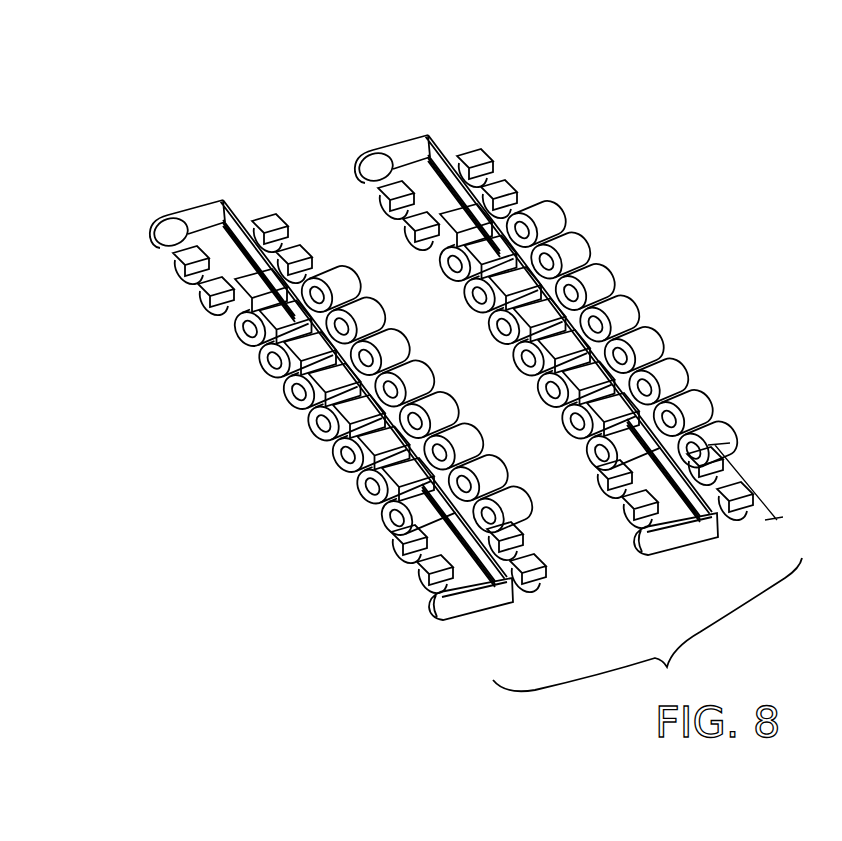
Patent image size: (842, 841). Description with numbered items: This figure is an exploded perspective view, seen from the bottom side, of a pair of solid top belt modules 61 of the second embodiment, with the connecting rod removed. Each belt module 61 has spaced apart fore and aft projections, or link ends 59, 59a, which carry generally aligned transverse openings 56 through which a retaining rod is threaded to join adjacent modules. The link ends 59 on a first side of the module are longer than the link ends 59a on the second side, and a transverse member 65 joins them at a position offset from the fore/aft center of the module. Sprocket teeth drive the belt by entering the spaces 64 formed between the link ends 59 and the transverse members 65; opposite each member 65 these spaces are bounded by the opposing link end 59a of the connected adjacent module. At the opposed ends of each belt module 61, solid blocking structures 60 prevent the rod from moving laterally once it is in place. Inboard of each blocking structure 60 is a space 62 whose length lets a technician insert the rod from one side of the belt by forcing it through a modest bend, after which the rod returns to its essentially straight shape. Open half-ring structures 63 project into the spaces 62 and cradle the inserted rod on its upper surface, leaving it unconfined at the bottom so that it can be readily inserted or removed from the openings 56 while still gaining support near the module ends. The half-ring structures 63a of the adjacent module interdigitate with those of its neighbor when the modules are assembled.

The transverse openings 56 is at (280, 399).
The link ends 59 is at (345, 490).
The link ends 59a is at (345, 312).
The solid blocking structures 60 is at (440, 615).
The belt module 61 is at (549, 278).
The space 62 is at (755, 485).
The open half-ring structures 63 is at (398, 563).
The end clip 63a is at (280, 221).
The spaces 64 is at (602, 303).
The transverse member 65 is at (462, 166).